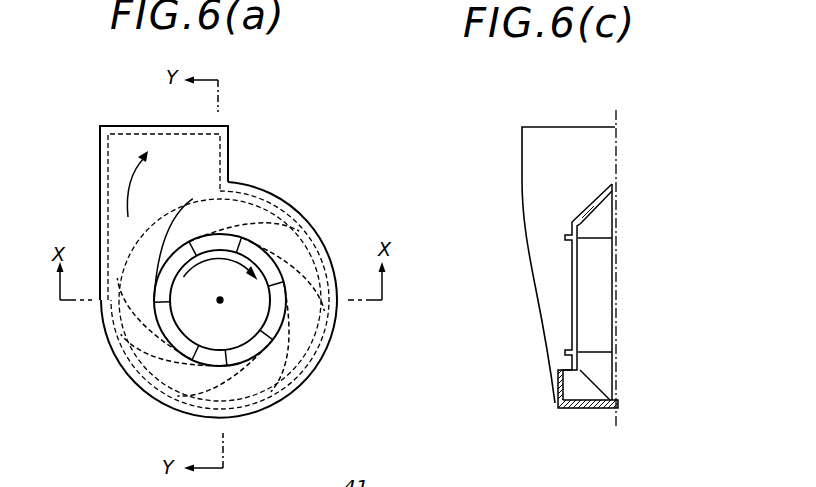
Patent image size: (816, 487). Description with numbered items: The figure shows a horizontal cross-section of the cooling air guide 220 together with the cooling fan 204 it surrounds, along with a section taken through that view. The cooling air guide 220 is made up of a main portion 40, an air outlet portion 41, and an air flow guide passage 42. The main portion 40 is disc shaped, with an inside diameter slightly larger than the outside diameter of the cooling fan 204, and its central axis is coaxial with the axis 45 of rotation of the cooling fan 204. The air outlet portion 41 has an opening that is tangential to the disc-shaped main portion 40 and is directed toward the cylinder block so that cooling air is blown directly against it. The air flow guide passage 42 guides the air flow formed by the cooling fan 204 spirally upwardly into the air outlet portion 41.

In FIG. 6A, the main portion 40 is at (277, 207).
In FIG. 6C, the main portion 40 is at (579, 250).
In FIG. 6A, the air outlet portion 41 is at (143, 126).
In FIG. 6C, the air outlet portion 41 is at (558, 127).
In FIG. 6A, the air flow guide passage 42 is at (116, 226).
In FIG. 6C, the air flow guide passage 42 is at (569, 384).
In FIG. 6A, the axis of rotation 45 is at (223, 298).
In FIG. 6A, the cooling fan 204 is at (300, 352).
In FIG. 6A, the cooling air guide 220 is at (144, 388).